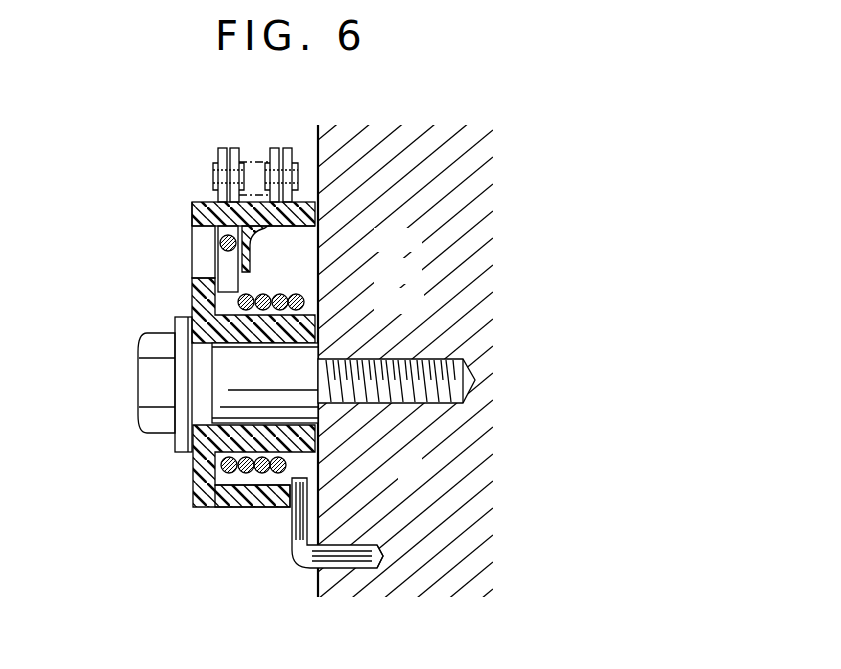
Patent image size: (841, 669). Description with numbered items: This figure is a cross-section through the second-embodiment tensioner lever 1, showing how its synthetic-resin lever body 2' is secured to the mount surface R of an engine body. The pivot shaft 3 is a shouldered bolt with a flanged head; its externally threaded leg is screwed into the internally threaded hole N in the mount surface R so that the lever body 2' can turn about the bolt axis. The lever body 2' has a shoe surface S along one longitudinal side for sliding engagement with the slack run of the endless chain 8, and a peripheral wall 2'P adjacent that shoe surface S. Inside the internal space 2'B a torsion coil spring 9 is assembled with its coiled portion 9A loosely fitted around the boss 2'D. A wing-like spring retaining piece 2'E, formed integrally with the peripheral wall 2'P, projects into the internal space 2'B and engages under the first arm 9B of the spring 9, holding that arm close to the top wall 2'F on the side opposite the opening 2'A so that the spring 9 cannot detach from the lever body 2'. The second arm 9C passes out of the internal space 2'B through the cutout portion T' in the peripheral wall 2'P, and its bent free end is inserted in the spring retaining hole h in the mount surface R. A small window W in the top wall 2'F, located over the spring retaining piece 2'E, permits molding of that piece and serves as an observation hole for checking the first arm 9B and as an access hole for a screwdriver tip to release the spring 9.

The tensioner lever 1 is at (122, 415).
The lever body 2' is at (201, 479).
The opening 2'A is at (370, 269).
The internal space 2'B is at (155, 258).
The boss 2'D is at (330, 300).
The spring retaining piece 2'E is at (343, 256).
The top wall 2'F is at (212, 310).
The peripheral wall 2'P is at (209, 152).
The pivot shaft 3 is at (128, 345).
The endless chain 8 is at (270, 162).
The torsion coil spring 9 is at (300, 465).
The coiled portion 9A is at (240, 500).
The first arm 9B is at (245, 272).
The second arm 9C is at (300, 562).
The internally threaded hole N is at (475, 360).
The mount surface R is at (317, 157).
The shoe surface S is at (212, 203).
The cutout portion T' is at (270, 545).
The window W is at (197, 232).
The spring retaining hole h is at (352, 568).